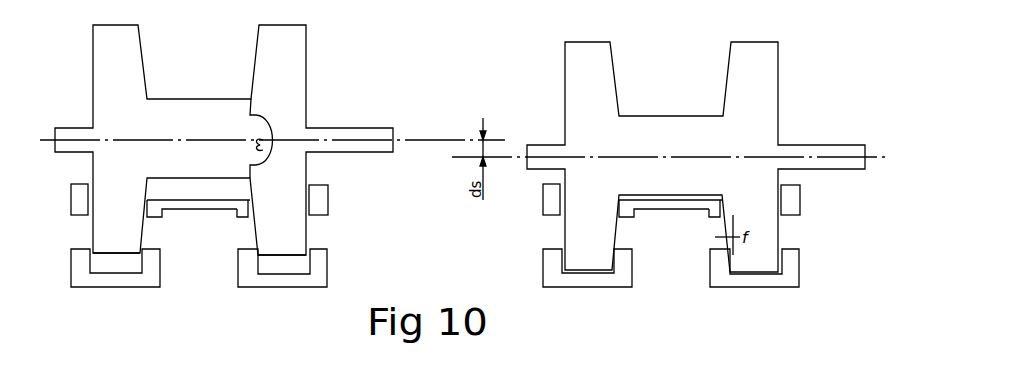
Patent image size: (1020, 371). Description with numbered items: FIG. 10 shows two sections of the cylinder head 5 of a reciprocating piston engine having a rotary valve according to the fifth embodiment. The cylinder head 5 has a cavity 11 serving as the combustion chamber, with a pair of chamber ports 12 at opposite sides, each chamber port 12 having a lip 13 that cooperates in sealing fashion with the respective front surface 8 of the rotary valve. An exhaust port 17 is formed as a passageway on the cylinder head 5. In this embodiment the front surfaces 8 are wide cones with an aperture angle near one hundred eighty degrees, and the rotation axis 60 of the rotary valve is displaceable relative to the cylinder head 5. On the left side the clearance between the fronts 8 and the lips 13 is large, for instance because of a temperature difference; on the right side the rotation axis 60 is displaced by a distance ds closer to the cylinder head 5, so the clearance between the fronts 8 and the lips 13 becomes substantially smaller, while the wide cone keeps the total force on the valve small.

The cylinder head 5 is at (105, 288).
The front surface 8 is at (255, 65).
The cavity 11 is at (195, 255).
The chamber port 12 is at (248, 250).
The flat lip 13 is at (252, 213).
The exhaust port 17 is at (72, 227).
The rotation axis 60 is at (432, 138).